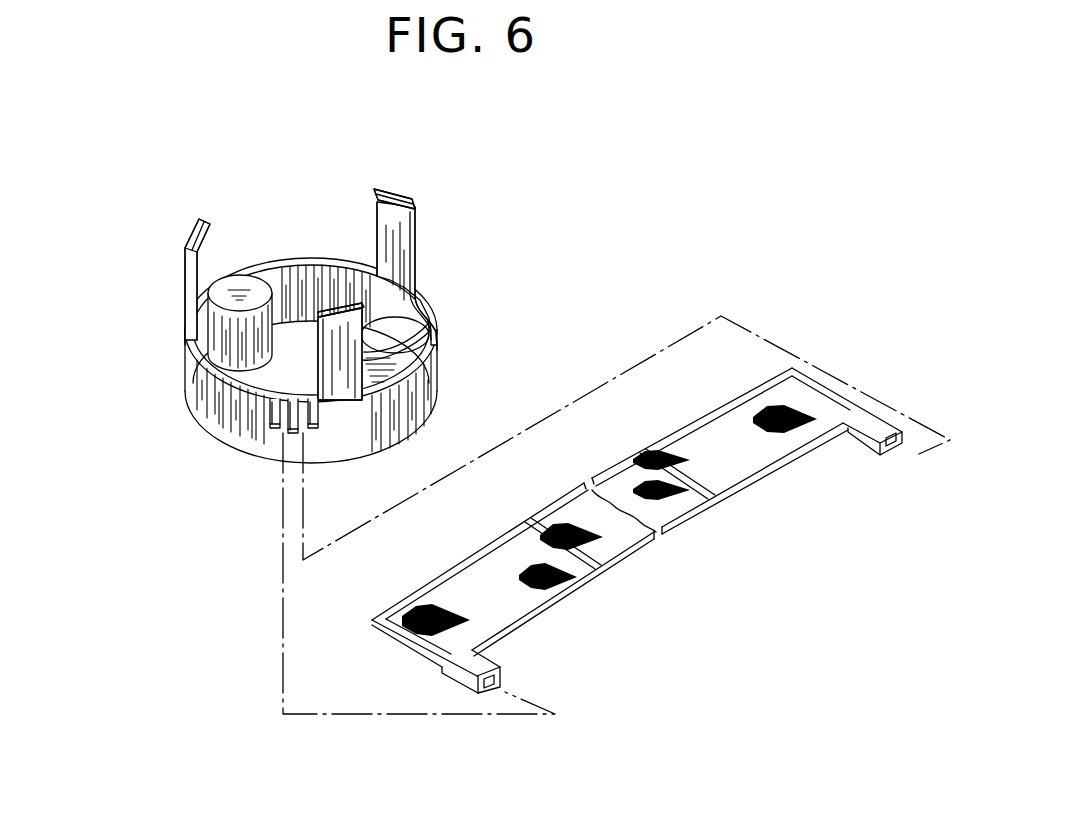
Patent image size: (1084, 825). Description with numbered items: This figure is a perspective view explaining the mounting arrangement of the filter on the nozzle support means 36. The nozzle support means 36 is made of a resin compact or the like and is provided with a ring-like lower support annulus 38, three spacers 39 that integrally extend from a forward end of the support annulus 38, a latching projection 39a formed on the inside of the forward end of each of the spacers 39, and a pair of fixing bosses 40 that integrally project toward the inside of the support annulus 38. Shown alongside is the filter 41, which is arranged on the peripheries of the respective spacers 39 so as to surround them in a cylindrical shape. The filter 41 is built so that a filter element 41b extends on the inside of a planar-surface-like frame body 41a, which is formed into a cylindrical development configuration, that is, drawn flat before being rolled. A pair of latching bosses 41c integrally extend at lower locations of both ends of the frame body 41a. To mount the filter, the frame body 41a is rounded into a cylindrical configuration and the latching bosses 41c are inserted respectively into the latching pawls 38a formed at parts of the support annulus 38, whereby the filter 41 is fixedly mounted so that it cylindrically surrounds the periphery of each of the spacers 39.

The nozzle support means 36 is at (299, 319).
The lower support annulus 38 is at (433, 332).
The latching pawls 38a is at (303, 434).
The spacers 39 is at (190, 290).
The latching projection 39a is at (205, 218).
The fixing bosses 40 is at (247, 273).
The filter 41 is at (663, 482).
The frame body 41a is at (806, 376).
The filter element 41b is at (735, 425).
The latching bosses 41c is at (880, 427).